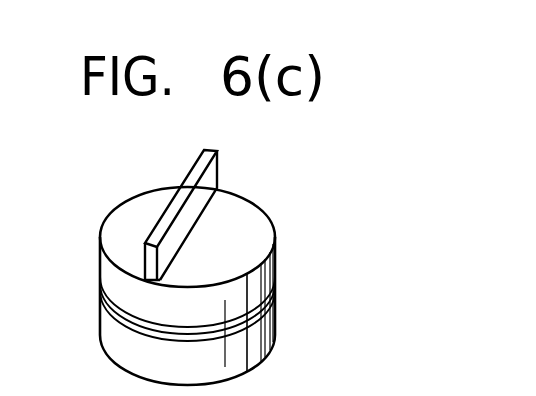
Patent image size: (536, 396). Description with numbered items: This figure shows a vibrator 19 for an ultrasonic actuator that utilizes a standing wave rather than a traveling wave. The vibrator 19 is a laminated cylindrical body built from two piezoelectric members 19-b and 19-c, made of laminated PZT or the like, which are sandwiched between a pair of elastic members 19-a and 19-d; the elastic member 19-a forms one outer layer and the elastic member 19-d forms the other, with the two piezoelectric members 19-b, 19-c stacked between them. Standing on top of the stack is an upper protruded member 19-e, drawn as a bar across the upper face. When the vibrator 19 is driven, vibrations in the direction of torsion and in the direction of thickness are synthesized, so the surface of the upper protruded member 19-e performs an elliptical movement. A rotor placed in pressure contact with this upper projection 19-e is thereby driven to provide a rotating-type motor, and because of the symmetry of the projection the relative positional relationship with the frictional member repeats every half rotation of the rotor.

The vibrator 19 is at (266, 286).
The elastic member 19-a is at (250, 282).
The piezoelectric member 19-b is at (258, 293).
The piezoelectric member 19-c is at (268, 330).
The elastic member 19-d is at (252, 350).
The upper protruded member 19-e is at (212, 177).